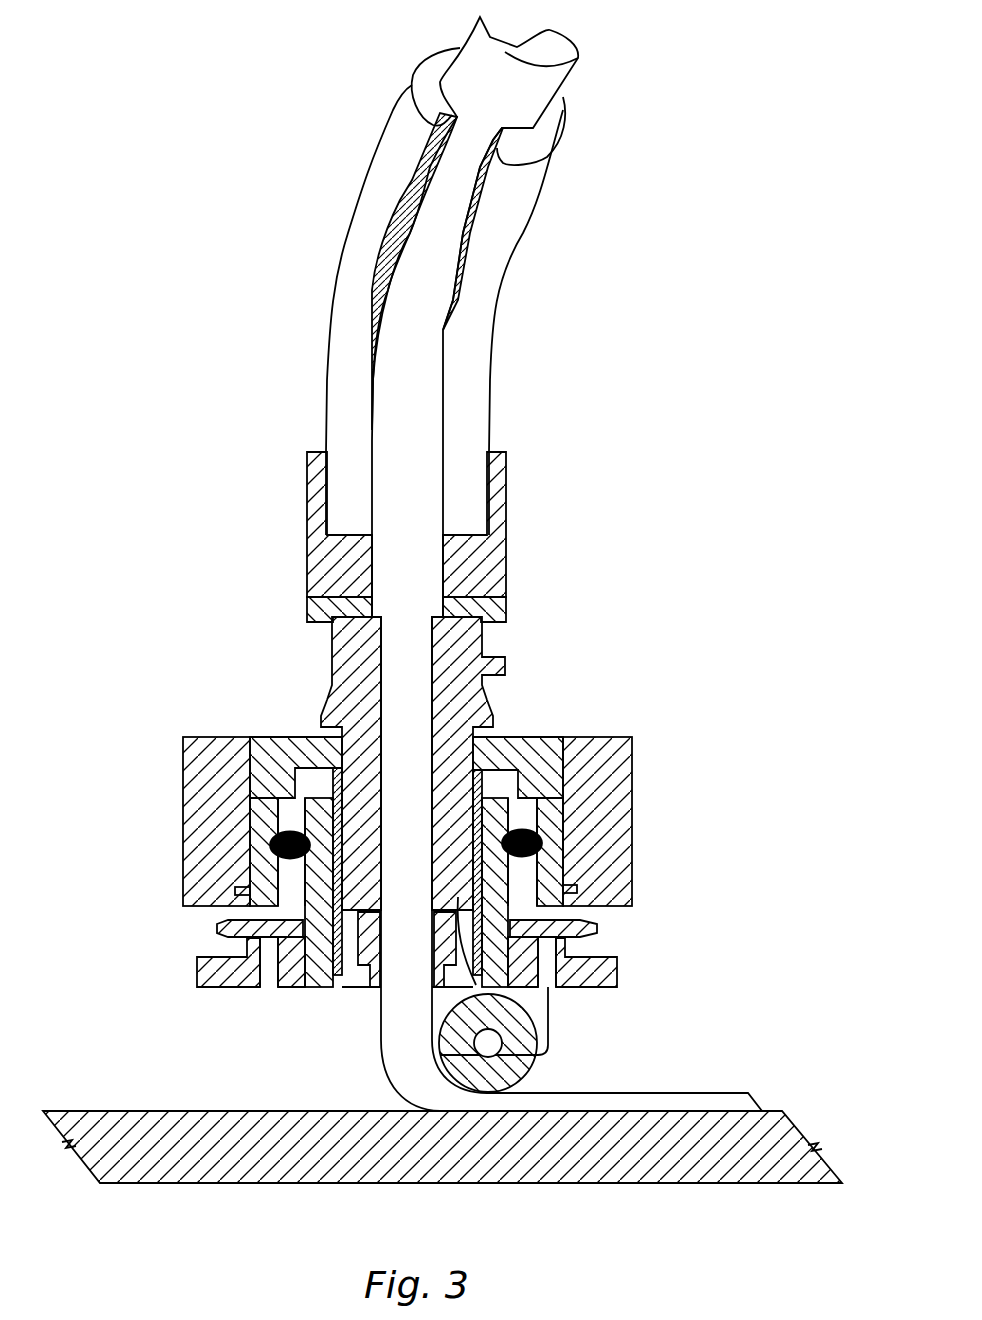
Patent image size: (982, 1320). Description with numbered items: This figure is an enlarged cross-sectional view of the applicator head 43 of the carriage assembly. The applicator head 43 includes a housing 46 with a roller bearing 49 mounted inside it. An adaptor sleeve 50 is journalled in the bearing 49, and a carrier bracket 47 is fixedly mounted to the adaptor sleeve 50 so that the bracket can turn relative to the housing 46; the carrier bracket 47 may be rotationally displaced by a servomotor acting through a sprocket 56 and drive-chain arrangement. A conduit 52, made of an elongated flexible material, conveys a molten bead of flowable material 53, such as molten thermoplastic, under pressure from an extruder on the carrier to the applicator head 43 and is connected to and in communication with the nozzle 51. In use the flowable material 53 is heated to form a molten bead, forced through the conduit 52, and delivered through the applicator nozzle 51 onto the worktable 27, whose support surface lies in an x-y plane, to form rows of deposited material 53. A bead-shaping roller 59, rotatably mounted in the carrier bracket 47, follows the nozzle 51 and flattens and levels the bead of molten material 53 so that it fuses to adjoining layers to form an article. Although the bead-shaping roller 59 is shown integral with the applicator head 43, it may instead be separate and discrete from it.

The worktable 27 is at (120, 1111).
The applicator head 43 is at (643, 842).
The housing 46 is at (183, 813).
The carrier bracket 47 is at (185, 973).
The roller bearing 49 is at (558, 817).
The adaptor sleeve 50 is at (343, 897).
The nozzle 51 is at (332, 686).
The conduit 52 is at (510, 238).
The flowable material 53 is at (465, 68).
The sprocket 56 is at (598, 930).
The bead-shaping roller 59 is at (540, 1068).